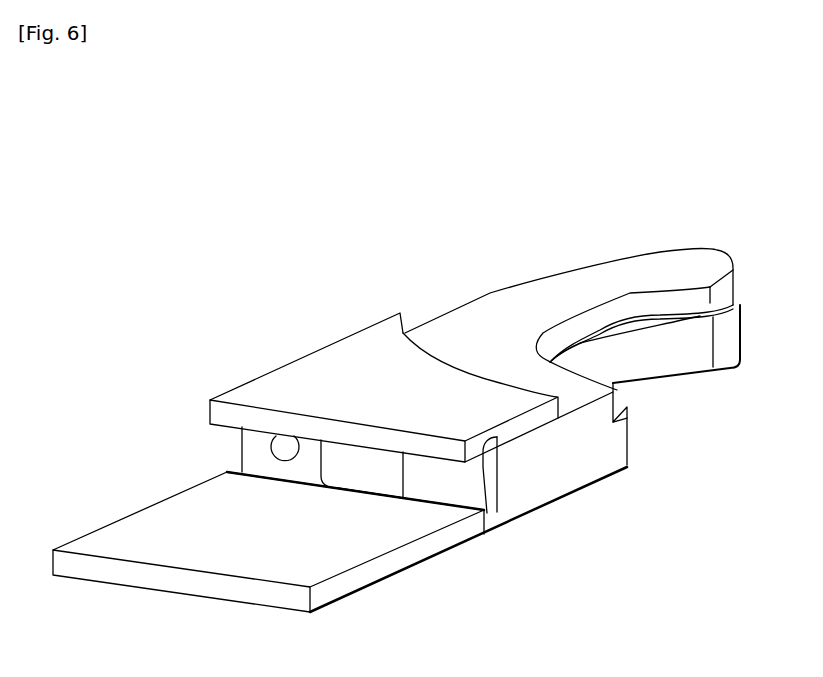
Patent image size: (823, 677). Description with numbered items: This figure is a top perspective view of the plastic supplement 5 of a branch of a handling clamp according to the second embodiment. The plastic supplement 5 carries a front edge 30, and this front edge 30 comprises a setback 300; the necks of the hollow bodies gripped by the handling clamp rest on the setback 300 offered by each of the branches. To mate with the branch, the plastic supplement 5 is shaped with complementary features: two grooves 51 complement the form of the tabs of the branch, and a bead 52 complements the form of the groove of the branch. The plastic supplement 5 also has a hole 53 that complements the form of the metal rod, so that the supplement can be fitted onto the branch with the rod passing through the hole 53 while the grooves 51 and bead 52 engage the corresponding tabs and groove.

The plastic supplement 5 is at (260, 276).
The front edge 30 is at (750, 305).
The setback 300 is at (568, 342).
The grooves 51 is at (487, 447).
The bead 52 is at (349, 487).
The hole 53 is at (281, 451).